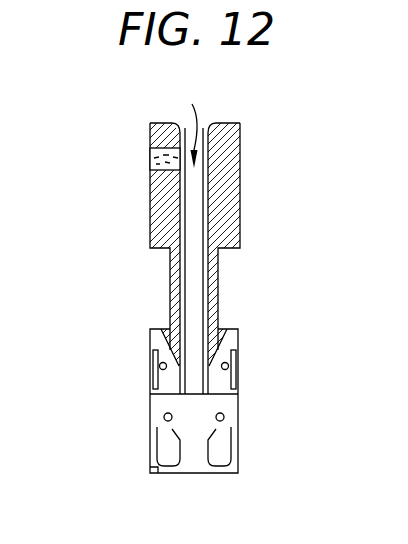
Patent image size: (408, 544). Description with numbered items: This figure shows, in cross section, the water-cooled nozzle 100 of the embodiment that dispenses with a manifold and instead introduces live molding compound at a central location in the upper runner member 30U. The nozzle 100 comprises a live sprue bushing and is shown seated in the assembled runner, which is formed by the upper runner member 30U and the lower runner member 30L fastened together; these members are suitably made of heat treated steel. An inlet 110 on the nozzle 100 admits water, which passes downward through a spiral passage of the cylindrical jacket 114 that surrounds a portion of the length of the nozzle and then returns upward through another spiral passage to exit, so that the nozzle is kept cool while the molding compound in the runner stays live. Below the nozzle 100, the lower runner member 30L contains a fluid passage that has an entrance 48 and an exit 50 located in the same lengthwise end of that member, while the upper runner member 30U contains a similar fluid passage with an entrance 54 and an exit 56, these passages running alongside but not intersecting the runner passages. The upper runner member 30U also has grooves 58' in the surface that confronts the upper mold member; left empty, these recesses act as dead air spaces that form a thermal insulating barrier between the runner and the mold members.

The water-cooled nozzle 100 is at (240, 168).
The inlet 110 is at (150, 160).
The cylindrical jacket 114 is at (209, 200).
The upper runner member 30U is at (150, 333).
The lower runner member 30L is at (238, 473).
The grooves 58' is at (195, 367).
The entrance 54 is at (228, 369).
The exit 56 is at (161, 369).
The entrance 48 is at (224, 414).
The exit 50 is at (158, 473).